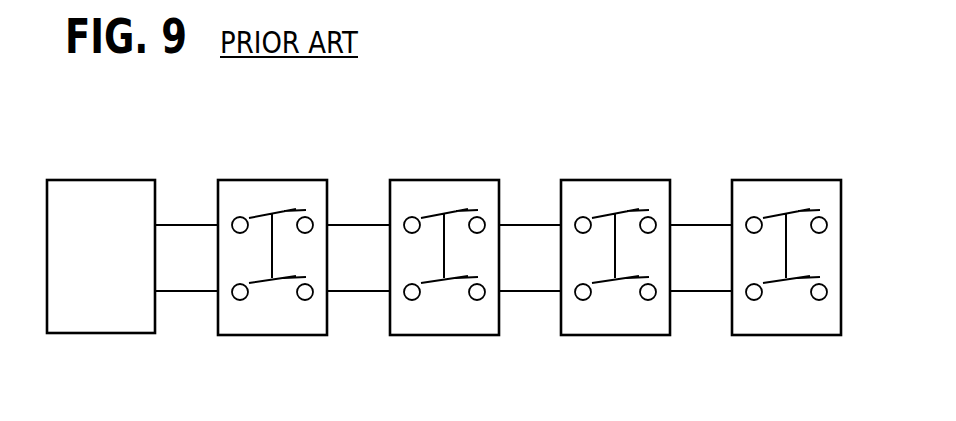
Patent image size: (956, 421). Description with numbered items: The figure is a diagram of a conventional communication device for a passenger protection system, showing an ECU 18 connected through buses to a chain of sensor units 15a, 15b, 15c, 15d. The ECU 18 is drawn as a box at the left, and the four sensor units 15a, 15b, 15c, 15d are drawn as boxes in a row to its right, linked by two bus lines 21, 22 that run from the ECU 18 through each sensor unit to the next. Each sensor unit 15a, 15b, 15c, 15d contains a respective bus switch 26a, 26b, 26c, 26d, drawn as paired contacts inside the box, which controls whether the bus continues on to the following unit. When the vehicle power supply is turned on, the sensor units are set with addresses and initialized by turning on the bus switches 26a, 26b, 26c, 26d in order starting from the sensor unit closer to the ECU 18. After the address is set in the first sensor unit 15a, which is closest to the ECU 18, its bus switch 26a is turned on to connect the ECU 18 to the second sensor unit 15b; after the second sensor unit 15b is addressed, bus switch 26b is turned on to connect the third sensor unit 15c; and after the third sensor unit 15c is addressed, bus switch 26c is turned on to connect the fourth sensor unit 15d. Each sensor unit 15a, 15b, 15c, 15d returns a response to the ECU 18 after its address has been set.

The ECU 18 is at (90, 179).
The first signal line 21 is at (176, 225).
The second signal line 22 is at (197, 291).
The first sensor unit 15a is at (287, 180).
The second sensor unit 15b is at (459, 180).
The third sensor unit 15c is at (630, 180).
The fourth sensor unit 15d is at (801, 180).
The bus switch 26a is at (283, 210).
The bus switch 26b is at (455, 210).
The bus switch 26c is at (626, 210).
The bus switch 26d is at (797, 210).